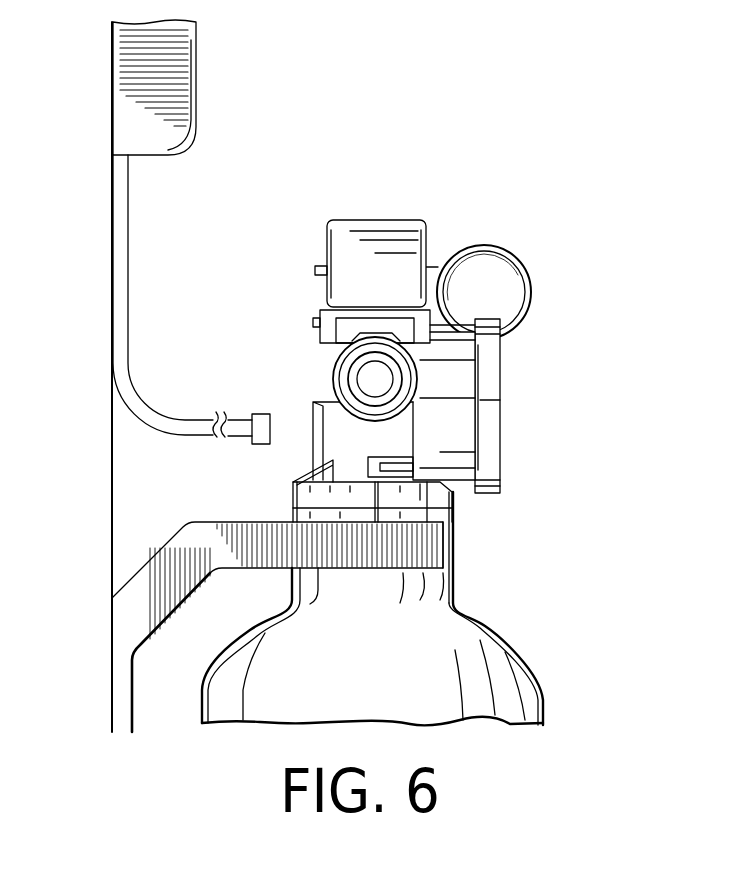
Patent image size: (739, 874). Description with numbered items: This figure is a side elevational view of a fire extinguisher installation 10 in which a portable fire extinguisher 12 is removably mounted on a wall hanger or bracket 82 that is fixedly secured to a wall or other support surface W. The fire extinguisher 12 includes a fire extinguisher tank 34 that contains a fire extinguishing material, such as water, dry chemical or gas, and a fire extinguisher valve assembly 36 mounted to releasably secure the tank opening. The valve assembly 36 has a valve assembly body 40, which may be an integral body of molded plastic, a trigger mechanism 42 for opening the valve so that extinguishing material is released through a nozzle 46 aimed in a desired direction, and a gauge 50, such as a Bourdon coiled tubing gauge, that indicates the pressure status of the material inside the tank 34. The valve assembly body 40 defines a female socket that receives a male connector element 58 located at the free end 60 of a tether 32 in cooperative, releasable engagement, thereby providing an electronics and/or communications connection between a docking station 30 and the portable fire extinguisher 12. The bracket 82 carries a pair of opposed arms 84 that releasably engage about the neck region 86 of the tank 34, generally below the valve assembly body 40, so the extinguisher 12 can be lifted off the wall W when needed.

The fluid delivery system 10 is at (568, 436).
The portable fire extinguisher 12 is at (520, 606).
The docking station 30 is at (145, 137).
The tether 32 is at (137, 400).
The fire extinguisher tank 34 is at (517, 672).
The fire extinguisher valve assembly 36 is at (432, 495).
The valve assembly body 40 is at (397, 431).
The trigger mechanism 42 is at (373, 237).
The nozzle 46 is at (405, 376).
The gauge 50 is at (500, 402).
The male connector element 58 is at (257, 415).
The free end 60 is at (237, 448).
The bracket 82 is at (130, 618).
The opposed arms 84 is at (371, 542).
The neck region 86 is at (465, 520).
The wall W is at (112, 475).